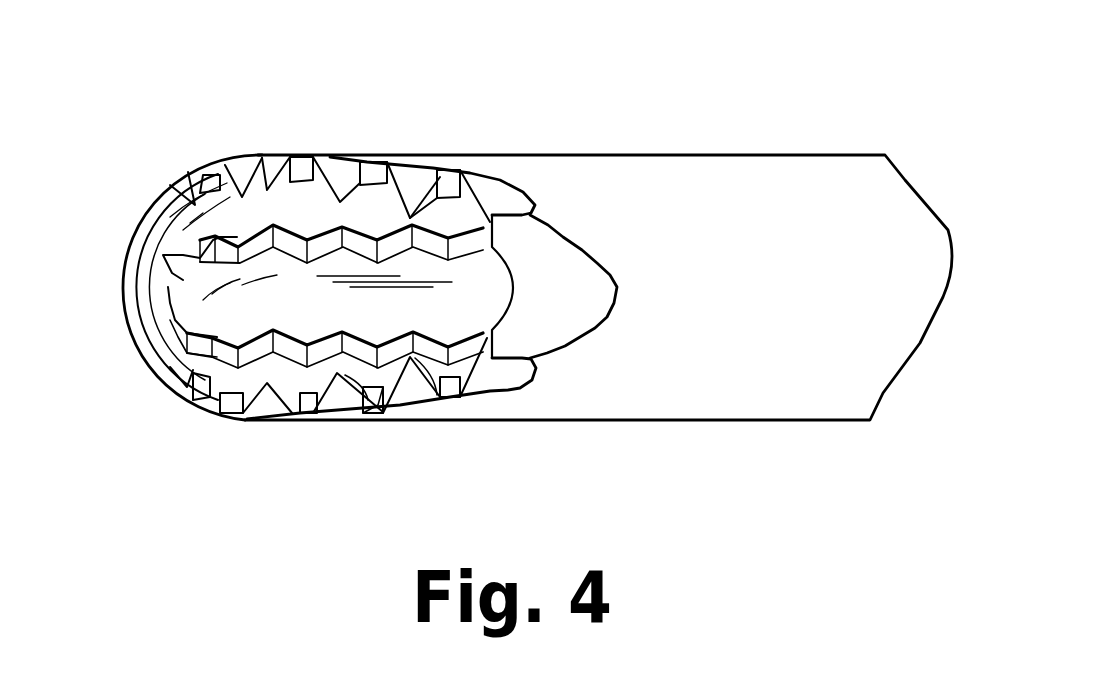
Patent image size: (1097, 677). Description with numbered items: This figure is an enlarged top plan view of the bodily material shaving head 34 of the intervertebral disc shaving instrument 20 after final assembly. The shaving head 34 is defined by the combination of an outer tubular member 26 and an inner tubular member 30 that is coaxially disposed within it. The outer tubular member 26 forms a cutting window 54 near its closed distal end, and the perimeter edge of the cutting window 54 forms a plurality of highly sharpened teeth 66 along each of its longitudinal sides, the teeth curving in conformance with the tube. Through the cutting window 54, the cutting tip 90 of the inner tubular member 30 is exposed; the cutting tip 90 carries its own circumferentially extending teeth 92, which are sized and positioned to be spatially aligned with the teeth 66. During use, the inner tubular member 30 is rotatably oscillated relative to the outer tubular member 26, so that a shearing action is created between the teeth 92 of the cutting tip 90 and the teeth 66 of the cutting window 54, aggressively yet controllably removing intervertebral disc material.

The intervertebral disc shaving instrument 20 is at (783, 53).
The outer tubular member 26 is at (622, 148).
The inner tubular member 30 is at (287, 205).
The bodily material shaving head 34 is at (358, 458).
The cutting window 54 is at (378, 405).
The teeth 66 is at (412, 190).
The cutting tip 90 is at (195, 262).
The teeth 92 is at (385, 243).